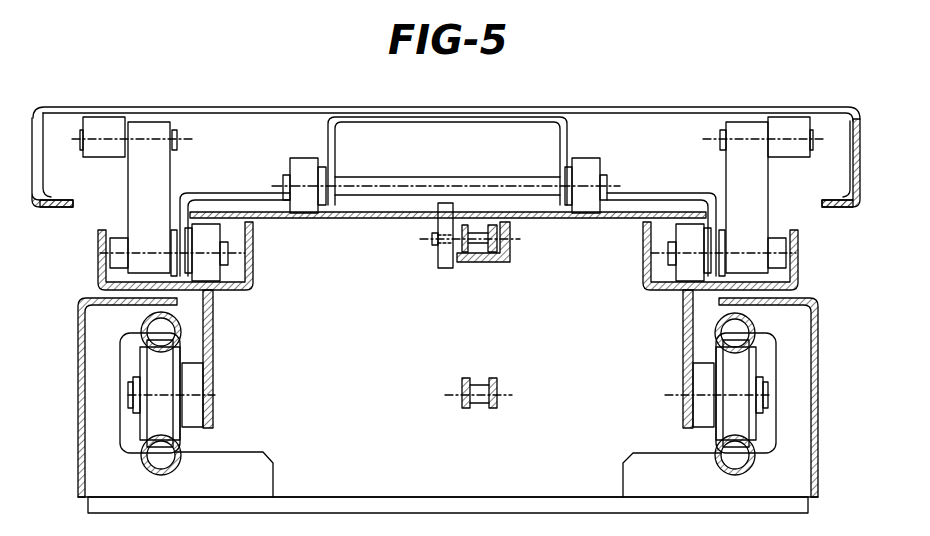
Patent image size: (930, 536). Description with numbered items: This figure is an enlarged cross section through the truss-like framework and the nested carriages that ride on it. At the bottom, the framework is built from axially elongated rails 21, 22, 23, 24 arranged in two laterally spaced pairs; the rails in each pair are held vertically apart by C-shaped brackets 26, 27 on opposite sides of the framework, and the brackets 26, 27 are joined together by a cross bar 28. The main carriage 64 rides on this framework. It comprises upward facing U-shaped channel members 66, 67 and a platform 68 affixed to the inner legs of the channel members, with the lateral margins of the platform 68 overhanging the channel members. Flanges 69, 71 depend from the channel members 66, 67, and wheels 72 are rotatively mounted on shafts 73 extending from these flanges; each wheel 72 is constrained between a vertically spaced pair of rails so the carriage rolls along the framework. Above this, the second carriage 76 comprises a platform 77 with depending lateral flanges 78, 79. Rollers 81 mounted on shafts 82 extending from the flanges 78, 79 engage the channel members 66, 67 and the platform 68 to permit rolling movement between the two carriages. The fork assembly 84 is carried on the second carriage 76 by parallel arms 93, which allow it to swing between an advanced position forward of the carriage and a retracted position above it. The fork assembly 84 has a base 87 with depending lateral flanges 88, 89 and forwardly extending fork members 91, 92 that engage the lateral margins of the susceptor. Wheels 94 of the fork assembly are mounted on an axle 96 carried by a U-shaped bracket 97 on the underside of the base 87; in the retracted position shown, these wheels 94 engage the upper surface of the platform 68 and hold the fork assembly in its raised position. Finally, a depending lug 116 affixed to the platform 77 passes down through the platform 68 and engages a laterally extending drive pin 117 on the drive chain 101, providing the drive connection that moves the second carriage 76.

The rail 21 is at (181, 334).
The rail 22 is at (153, 471).
The rail 23 is at (716, 331).
The rail 24 is at (722, 468).
The C-shaped bracket 26 is at (95, 421).
The C-shaped bracket 27 is at (800, 416).
The cross bar 28 is at (432, 496).
The main carriage 64 is at (448, 264).
The U-shaped channel member 66 is at (236, 292).
The U-shaped channel member 67 is at (660, 292).
The platform 68 is at (538, 221).
The flange 69 is at (212, 362).
The flange 71 is at (682, 373).
The wheel 72 is at (150, 358).
The shaft 73 is at (128, 395).
The second carriage 76 is at (246, 190).
The platform 77 is at (633, 197).
The lateral flange 78 is at (175, 222).
The lateral flange 79 is at (722, 228).
The roller 81 is at (208, 237).
The shaft 82 is at (226, 254).
The fork assembly 84 is at (445, 160).
The base 87 is at (308, 106).
The lateral flange 88 is at (44, 158).
The lateral flange 89 is at (848, 168).
The fork member 91 is at (68, 210).
The fork member 92 is at (830, 214).
The parallel arm 93 is at (137, 181).
The wheel 94 is at (305, 160).
The axle 96 is at (390, 180).
The U-shaped bracket 97 is at (334, 143).
The drive chain 101 is at (478, 263).
The depending lug 116 is at (443, 269).
The drive pin 117 is at (432, 240).